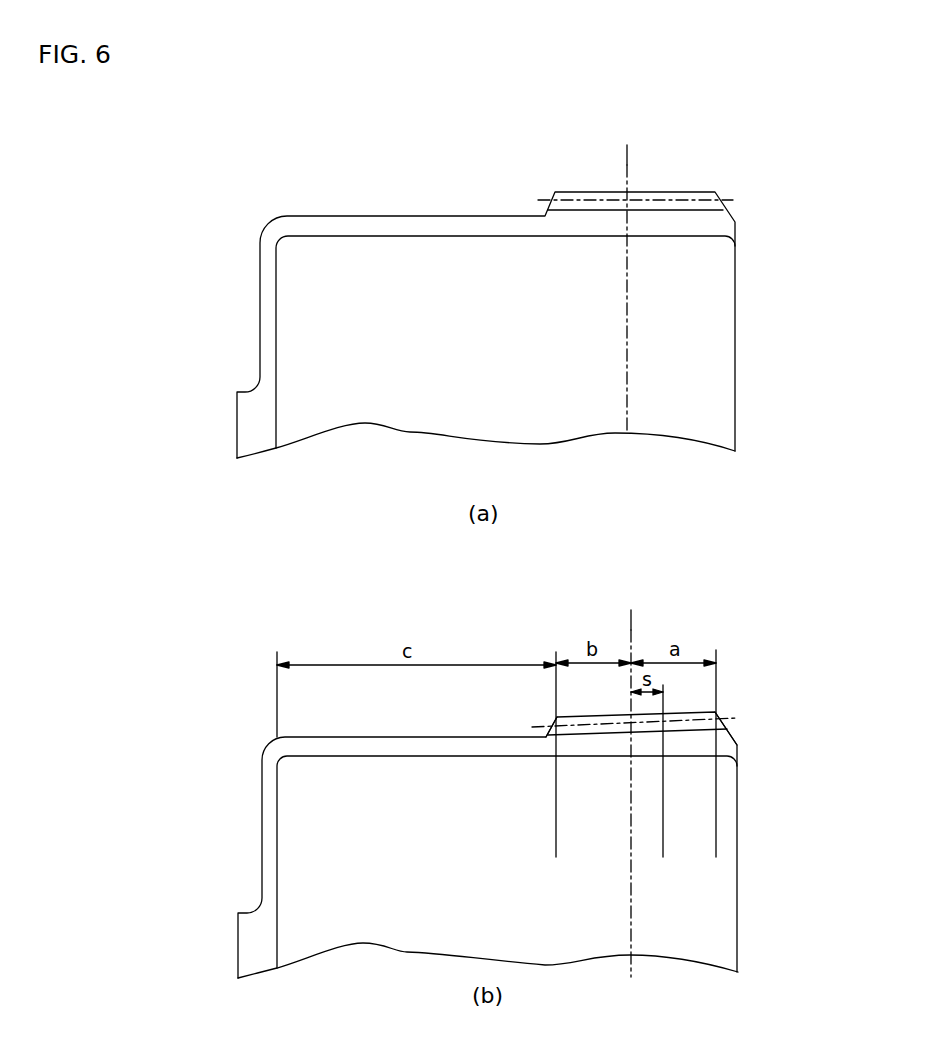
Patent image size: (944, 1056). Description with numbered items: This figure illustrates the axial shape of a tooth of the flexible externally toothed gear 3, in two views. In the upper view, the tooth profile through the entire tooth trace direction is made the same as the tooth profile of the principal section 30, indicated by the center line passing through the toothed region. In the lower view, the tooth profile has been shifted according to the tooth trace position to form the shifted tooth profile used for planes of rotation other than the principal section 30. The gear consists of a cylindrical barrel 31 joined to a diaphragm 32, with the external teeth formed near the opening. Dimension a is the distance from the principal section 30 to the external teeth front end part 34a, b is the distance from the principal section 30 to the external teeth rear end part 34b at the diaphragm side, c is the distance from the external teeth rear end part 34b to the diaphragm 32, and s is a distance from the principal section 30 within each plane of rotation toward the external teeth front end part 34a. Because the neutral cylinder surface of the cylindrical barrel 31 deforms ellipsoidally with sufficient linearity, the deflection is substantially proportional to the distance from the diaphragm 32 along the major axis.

The flexible externally toothed gear 3 is at (444, 821).
The principal section 30 is at (627, 158).
The cylindrical barrel 31 is at (467, 763).
The diaphragm 32 is at (262, 823).
The external teeth front end part 34a is at (717, 707).
The external teeth rear end part 34b is at (556, 718).